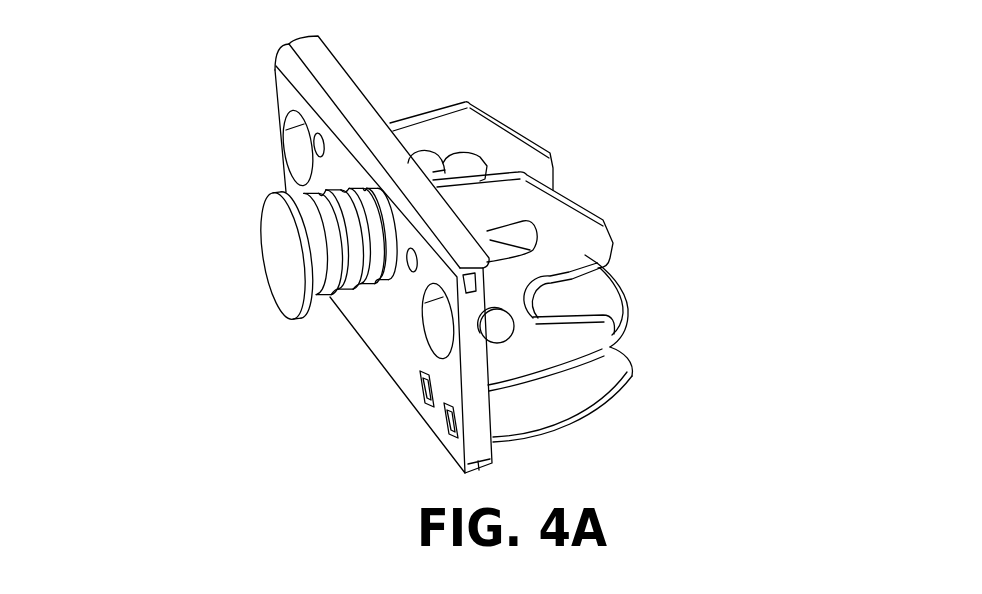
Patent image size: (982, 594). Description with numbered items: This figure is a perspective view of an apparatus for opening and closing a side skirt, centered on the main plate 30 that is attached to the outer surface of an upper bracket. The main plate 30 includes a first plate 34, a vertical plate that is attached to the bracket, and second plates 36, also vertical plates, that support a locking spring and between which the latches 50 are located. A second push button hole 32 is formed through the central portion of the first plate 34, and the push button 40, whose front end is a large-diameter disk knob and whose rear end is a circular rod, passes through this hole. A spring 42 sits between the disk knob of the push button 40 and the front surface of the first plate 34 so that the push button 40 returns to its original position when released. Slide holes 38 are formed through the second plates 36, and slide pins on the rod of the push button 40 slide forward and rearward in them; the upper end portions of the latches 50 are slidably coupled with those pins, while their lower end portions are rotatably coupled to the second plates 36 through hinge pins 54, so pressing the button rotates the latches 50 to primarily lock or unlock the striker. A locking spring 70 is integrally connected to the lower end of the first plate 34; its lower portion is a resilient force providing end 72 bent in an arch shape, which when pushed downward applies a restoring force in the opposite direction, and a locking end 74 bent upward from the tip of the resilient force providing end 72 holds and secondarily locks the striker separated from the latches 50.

The main plate 30 is at (455, 237).
The second push button hole 32 is at (300, 196).
The first plate 34 is at (338, 78).
The second plates 36 is at (457, 132).
The slide holes 38 is at (540, 235).
The push button 40 is at (258, 213).
The spring 42 is at (334, 300).
The latches 50 is at (625, 294).
The hinge pins 54 is at (494, 333).
The locking spring 70 is at (605, 408).
The resilient force providing end 72 is at (602, 372).
The locking end 74 is at (598, 265).